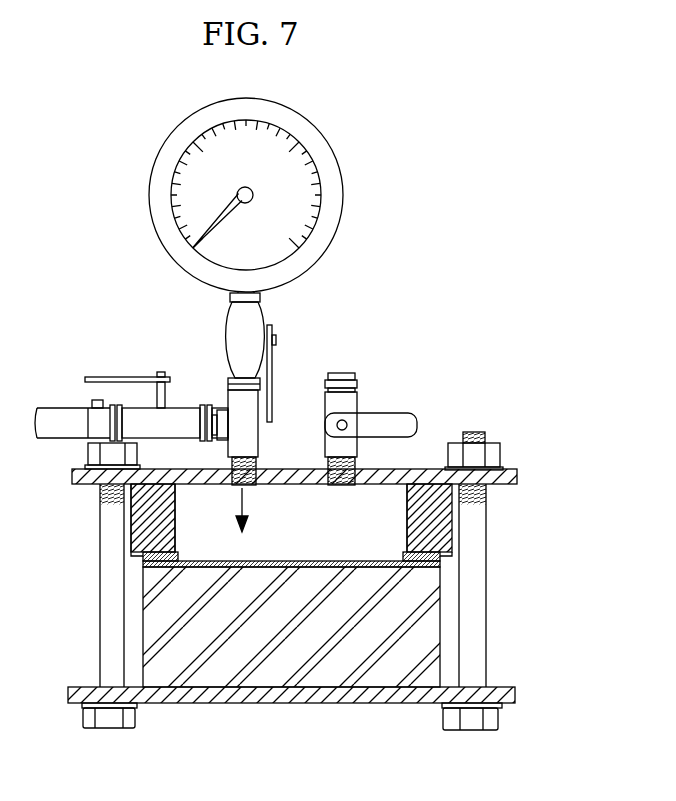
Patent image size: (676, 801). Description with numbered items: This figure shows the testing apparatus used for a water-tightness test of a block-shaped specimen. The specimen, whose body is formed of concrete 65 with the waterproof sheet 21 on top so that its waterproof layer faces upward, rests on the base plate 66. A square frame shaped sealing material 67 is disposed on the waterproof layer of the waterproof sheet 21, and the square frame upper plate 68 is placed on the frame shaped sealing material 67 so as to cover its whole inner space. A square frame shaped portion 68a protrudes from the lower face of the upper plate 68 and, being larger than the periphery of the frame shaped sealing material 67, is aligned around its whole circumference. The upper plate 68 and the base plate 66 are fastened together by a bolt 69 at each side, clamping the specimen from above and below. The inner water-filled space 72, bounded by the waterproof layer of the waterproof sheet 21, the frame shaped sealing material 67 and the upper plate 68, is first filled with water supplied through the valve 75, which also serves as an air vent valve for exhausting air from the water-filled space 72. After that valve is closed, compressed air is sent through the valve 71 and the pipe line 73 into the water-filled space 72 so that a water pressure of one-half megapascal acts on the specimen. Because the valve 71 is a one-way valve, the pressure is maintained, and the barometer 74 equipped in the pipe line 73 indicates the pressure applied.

The barometer 74 is at (340, 177).
The pipe line 73 is at (262, 440).
The valve 71 is at (183, 407).
The air vent valve 75 is at (358, 400).
The water-filled space 72 is at (383, 508).
The upper plate 68 is at (507, 469).
The square frame shaped portion 68a is at (128, 532).
The frame shaped sealing material 67 is at (440, 534).
The waterproof sheet 21 is at (435, 563).
The bolt 69 is at (100, 577).
The concrete 65 is at (281, 635).
The base plate 66 is at (192, 703).